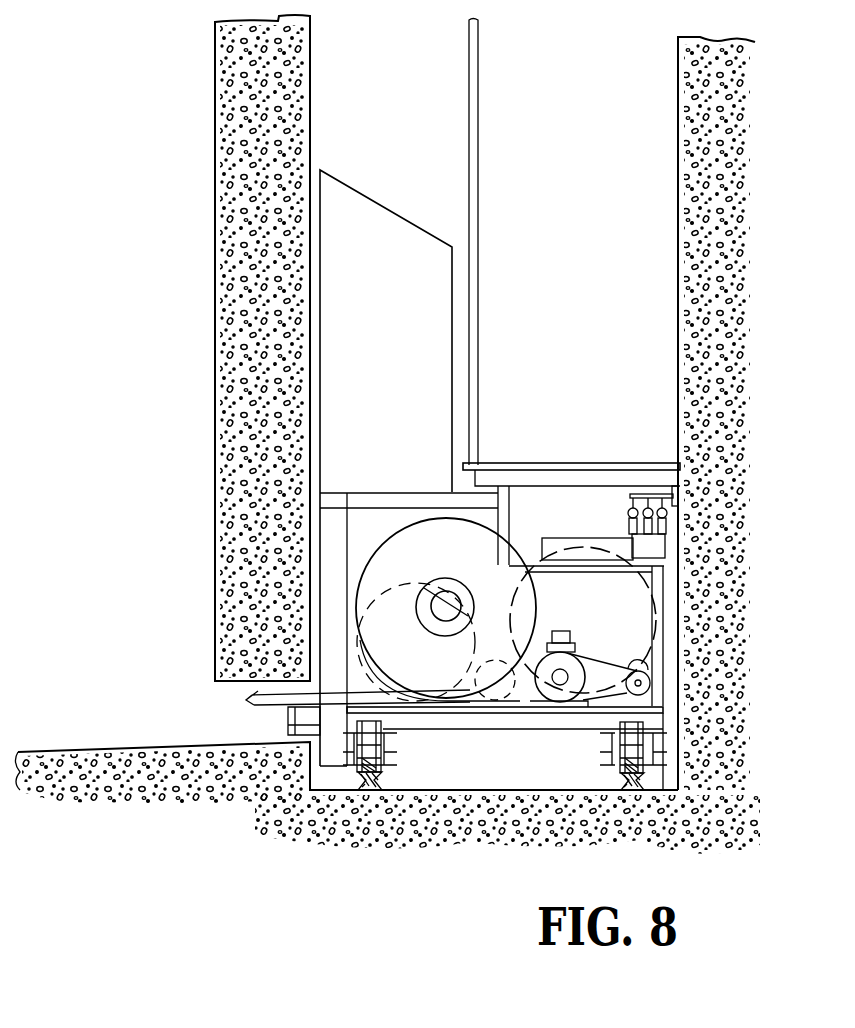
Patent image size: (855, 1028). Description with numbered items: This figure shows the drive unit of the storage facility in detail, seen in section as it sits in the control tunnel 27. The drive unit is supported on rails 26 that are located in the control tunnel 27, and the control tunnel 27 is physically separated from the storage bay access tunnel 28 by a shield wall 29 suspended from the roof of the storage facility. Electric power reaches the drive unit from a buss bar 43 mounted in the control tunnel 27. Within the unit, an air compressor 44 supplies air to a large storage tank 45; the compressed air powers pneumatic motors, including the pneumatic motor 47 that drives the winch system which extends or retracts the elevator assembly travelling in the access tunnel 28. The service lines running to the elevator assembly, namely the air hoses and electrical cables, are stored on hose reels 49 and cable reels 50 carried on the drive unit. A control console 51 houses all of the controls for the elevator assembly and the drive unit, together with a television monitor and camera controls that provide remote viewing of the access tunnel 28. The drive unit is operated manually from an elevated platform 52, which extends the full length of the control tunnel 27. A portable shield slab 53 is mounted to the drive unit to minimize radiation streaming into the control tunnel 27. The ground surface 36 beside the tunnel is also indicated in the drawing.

The rails 26 is at (372, 790).
The control tunnel 27 is at (590, 136).
The storage bay access tunnel 28 is at (121, 278).
The shield wall 29 is at (288, 155).
The ground surface 36 is at (82, 717).
The buss bar 43 is at (628, 510).
The air compressor 44 is at (565, 692).
The storage tank 45 is at (605, 620).
The pneumatic motor 47 is at (497, 692).
The hose reels 49 is at (460, 566).
The cable reels 50 is at (418, 692).
The control console 51 is at (405, 309).
The elevated platform 52 is at (572, 465).
The portable shield slab 53 is at (332, 766).